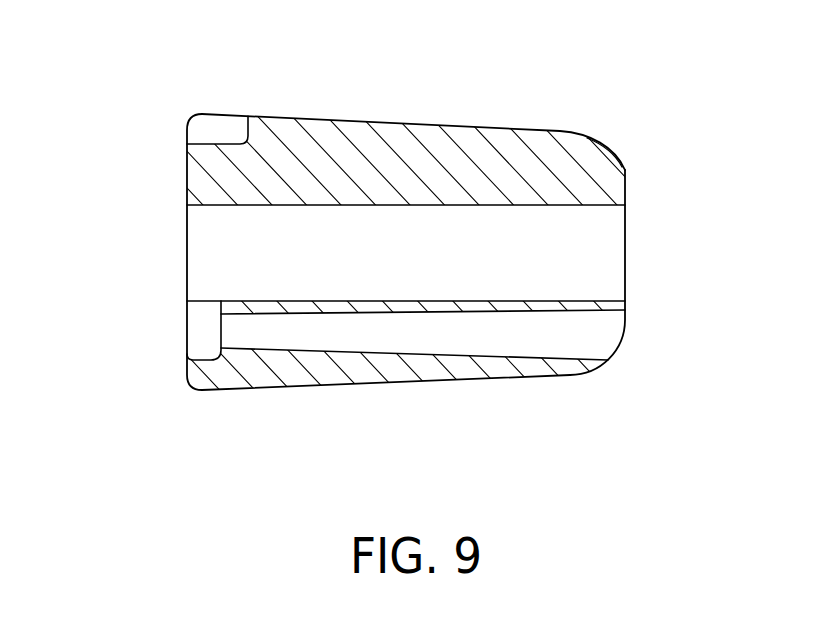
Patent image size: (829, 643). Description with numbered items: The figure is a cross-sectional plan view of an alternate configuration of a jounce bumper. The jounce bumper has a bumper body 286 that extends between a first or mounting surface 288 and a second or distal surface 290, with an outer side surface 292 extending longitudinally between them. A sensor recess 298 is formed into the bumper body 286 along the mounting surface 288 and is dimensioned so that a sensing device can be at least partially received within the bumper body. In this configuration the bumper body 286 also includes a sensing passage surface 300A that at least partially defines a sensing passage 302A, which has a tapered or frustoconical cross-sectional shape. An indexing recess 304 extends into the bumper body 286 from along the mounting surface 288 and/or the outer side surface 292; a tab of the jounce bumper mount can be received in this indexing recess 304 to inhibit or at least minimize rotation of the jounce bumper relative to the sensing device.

The bumper body 286 is at (409, 150).
The mounting surface 288 is at (187, 181).
The distal surface 290 is at (625, 187).
The outer side surface 292 is at (497, 128).
The sensor recess 298 is at (192, 334).
The sensing passage surface 300A is at (420, 355).
The sensing passage 302A is at (592, 334).
The indexing recess 304 is at (218, 130).